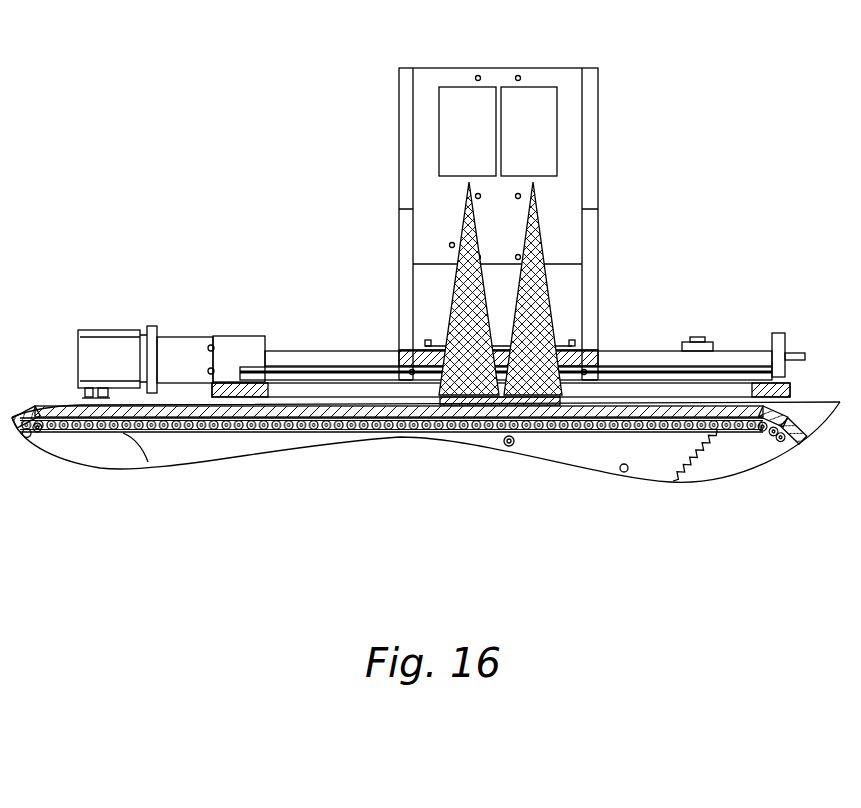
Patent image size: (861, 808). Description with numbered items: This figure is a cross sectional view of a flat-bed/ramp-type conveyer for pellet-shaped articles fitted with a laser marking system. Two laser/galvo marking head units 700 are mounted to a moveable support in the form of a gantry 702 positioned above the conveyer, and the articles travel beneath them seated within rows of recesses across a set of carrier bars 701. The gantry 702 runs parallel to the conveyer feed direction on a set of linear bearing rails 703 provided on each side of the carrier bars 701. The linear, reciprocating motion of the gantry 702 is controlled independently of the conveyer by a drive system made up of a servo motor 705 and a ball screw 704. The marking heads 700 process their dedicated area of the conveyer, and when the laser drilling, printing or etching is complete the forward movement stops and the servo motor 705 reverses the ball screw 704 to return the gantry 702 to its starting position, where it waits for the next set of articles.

The laser/galvo marking head unit 700 is at (469, 100).
The carrier bar 701 is at (475, 412).
The gantry 702 is at (398, 113).
The linear bearing rail 703 is at (637, 377).
The ball screw 704 is at (353, 360).
The servo motor 705 is at (112, 326).